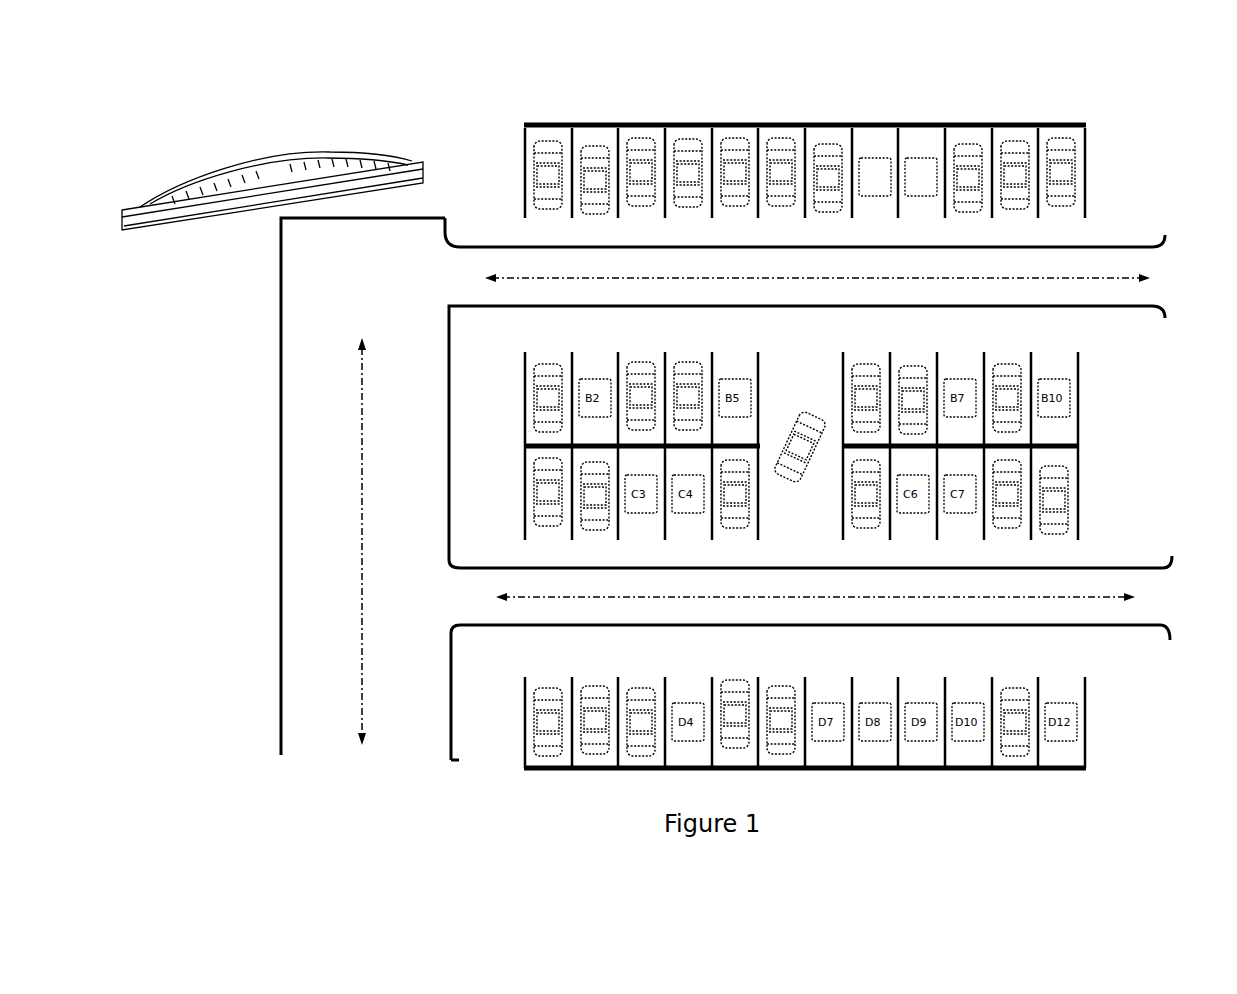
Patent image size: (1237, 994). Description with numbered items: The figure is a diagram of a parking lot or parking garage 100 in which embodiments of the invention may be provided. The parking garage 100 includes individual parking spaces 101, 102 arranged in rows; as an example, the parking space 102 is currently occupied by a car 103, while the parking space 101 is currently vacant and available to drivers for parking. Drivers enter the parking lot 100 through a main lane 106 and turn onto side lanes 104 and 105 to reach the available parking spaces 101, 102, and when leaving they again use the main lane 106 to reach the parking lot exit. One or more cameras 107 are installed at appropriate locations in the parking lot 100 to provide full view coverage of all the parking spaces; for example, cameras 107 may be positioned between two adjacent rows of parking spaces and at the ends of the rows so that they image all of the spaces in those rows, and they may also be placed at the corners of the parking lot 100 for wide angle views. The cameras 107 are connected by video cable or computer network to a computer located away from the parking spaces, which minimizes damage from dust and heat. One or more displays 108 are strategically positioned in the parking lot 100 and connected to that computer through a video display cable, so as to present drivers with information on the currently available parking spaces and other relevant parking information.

The parking garage 100 is at (1105, 68).
The parking space 101 is at (862, 140).
The parking space 102 is at (623, 137).
The car 103 is at (648, 148).
The side lane 104 is at (1122, 288).
The side lane 105 is at (1133, 608).
The main lane 106 is at (305, 388).
The camera 107 is at (793, 470).
The display 108 is at (272, 160).